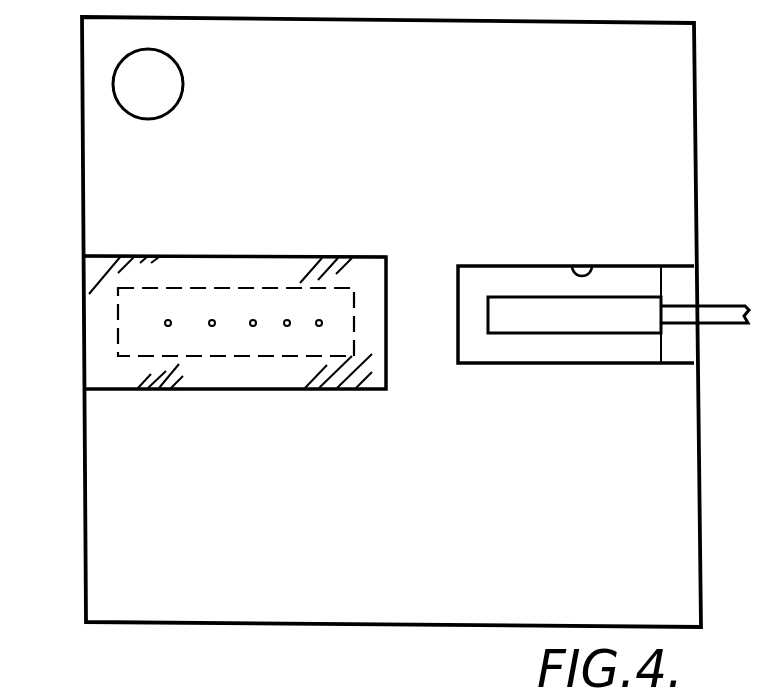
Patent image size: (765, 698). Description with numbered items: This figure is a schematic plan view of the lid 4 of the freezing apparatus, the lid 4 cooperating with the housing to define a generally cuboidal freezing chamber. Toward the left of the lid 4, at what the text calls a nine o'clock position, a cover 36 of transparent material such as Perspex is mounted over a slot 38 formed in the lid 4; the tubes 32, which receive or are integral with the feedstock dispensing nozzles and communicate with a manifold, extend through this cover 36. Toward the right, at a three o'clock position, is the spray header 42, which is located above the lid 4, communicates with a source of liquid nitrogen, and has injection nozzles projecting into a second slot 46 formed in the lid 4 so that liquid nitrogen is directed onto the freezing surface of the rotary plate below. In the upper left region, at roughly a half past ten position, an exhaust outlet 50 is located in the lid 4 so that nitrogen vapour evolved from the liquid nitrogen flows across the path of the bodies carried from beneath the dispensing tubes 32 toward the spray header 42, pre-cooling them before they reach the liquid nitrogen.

The lid 4 is at (336, 138).
The exhaust outlet 50 is at (115, 78).
The cover 36 is at (173, 265).
The slot 38 is at (222, 358).
The tubes 32 is at (214, 321).
The spray header 42 is at (512, 305).
The slot 46 is at (598, 262).